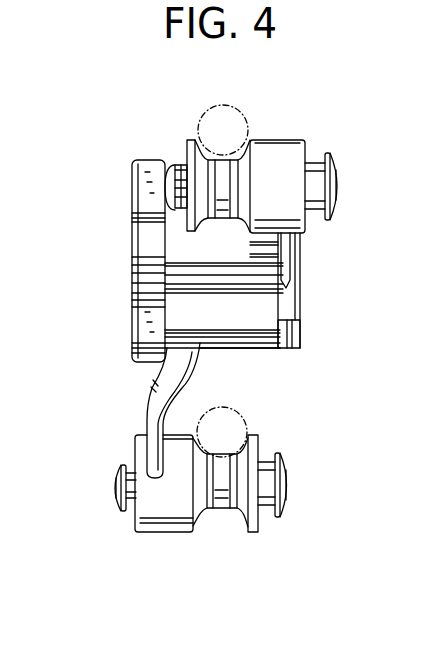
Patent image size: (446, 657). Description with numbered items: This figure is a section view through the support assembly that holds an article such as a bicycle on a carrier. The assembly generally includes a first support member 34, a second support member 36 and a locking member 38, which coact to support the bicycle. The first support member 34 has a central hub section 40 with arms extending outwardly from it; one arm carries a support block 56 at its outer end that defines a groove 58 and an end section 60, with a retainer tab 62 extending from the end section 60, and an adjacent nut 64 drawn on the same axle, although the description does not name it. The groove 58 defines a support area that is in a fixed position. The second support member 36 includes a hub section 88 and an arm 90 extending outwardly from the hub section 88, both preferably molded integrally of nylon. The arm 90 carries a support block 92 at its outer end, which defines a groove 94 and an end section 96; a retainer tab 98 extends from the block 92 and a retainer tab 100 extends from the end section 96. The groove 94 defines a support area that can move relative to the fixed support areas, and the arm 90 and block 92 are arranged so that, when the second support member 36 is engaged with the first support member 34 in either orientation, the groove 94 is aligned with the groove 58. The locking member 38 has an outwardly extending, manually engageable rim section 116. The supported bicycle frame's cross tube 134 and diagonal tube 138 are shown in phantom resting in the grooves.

The first support member 34 is at (310, 281).
The second support member 36 is at (112, 422).
The locking member 38 is at (80, 266).
The hub section 40 is at (296, 352).
The support block 56 is at (293, 140).
The groove 58 is at (221, 160).
The end section 60 is at (189, 138).
The retainer tab 62 is at (344, 185).
The nut 64 is at (170, 162).
The hub section 88 is at (255, 356).
The arm 90 is at (138, 392).
The support block 92 is at (165, 535).
The groove 94 is at (222, 509).
The end section 96 is at (258, 530).
The retainer tab 98 is at (115, 497).
The retainer tab 100 is at (292, 505).
The rim section 116 is at (126, 228).
The cross tube 134 is at (240, 98).
The diagonal tube 138 is at (243, 402).